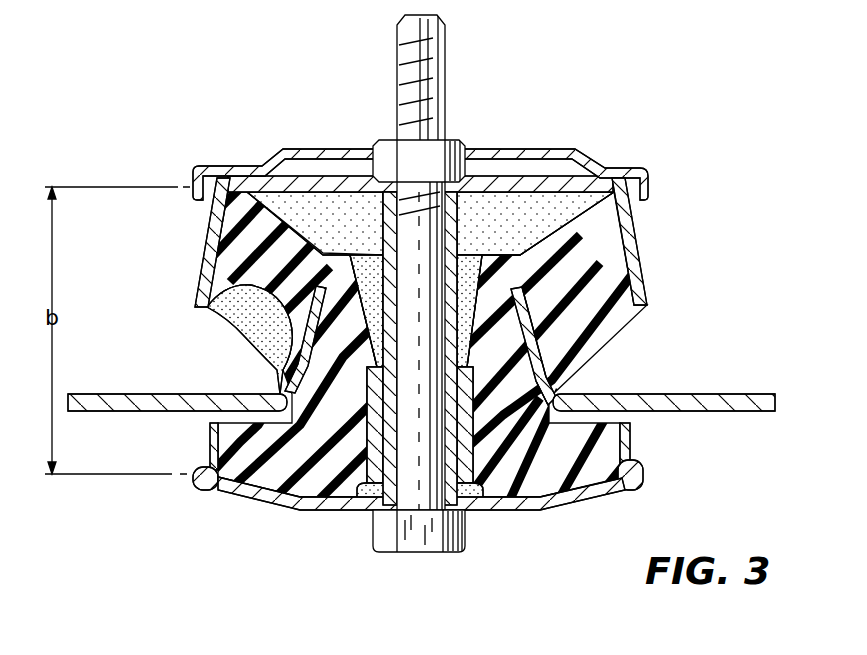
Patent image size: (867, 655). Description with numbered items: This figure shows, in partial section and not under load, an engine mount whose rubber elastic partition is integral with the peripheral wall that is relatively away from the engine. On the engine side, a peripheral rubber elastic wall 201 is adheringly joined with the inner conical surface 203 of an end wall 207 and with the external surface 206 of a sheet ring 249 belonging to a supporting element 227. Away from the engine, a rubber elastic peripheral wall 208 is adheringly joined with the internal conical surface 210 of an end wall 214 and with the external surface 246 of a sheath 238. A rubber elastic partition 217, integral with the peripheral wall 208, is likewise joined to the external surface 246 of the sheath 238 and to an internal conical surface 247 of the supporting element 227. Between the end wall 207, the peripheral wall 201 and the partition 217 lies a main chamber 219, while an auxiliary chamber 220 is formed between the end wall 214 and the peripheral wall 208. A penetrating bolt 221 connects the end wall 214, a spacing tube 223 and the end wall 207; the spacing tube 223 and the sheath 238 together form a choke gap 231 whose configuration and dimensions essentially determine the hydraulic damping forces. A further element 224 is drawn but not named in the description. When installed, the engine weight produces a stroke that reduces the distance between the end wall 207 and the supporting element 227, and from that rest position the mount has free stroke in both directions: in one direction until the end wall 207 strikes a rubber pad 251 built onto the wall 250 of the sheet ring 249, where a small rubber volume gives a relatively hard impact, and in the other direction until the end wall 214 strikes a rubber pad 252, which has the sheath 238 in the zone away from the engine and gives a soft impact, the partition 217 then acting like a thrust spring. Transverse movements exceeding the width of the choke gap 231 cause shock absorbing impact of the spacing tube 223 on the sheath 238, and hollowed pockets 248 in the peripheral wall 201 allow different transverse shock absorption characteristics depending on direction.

The peripheral rubber elastic wall 201 is at (597, 305).
The inner conical surface 203 is at (639, 277).
The external surface 206 is at (541, 318).
The end wall 207 is at (592, 165).
The rubber elastic peripheral wall 208 is at (215, 446).
The internal conical surface 210 is at (208, 474).
The end wall 214 is at (632, 482).
The rubber elastic partition 217 is at (282, 367).
The main chamber 219 is at (372, 230).
The auxiliary chamber 220 is at (523, 496).
The penetrating bolt 221 is at (410, 535).
The spacing tube 223 is at (378, 287).
The bolt 224 is at (446, 32).
The supporting element 227 is at (706, 395).
The choke gap 231 is at (378, 400).
The sheath 238 is at (370, 390).
The external surface 246 is at (478, 452).
The internal conical surface 247 is at (533, 351).
The hollowed pockets 248 is at (217, 293).
The sheet ring 249 is at (539, 374).
The wall 250 is at (514, 252).
The rubber pad 251 is at (490, 262).
The rubber pad 252 is at (338, 503).